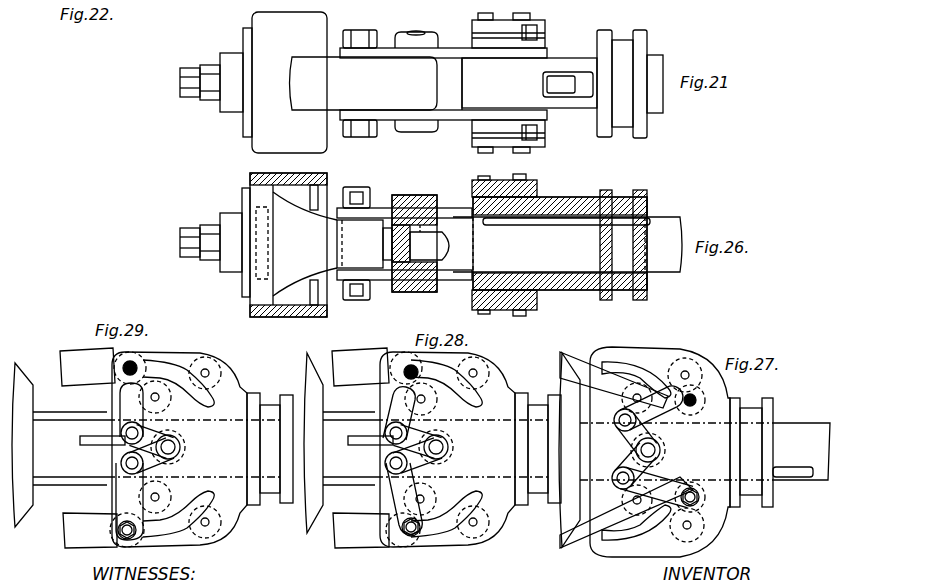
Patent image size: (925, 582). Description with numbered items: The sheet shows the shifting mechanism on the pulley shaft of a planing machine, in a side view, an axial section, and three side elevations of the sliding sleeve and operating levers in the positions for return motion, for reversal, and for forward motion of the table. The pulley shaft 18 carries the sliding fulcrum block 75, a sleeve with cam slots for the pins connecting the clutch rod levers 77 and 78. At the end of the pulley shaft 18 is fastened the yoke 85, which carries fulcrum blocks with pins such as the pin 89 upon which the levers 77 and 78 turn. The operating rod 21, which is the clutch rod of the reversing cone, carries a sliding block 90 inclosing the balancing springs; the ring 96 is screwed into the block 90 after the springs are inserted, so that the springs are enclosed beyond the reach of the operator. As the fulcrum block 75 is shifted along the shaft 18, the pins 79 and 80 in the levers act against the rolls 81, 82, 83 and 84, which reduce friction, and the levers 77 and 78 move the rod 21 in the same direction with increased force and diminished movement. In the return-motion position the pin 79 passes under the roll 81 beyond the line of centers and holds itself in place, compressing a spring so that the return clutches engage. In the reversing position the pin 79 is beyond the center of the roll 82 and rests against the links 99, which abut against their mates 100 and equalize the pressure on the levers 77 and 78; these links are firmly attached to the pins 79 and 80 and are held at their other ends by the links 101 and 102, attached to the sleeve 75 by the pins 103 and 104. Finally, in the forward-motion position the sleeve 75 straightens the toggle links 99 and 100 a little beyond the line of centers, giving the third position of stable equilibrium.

In FIG. 26, the pulley shaft 18 is at (567, 244).
In FIG. 26, the operating rod 21 is at (429, 242).
In FIG. 21, the sliding fulcrum block 75 is at (562, 83).
In FIG. 26, the sliding fulcrum block 75 is at (570, 203).
In FIG. 26, the clutch rod levers 77 is at (460, 213).
In FIG. 29, the clutch rod levers 77 is at (87, 367).
In FIG. 28, the clutch rod levers 77 is at (360, 367).
In FIG. 21, the clutch rod levers 78 is at (451, 52).
In FIG. 29, the clutch rod levers 78 is at (90, 530).
In FIG. 28, the clutch rod levers 78 is at (361, 530).
In FIG. 29, the pin 79 is at (140, 368).
In FIG. 28, the pin 79 is at (436, 379).
In FIG. 27, the pin 79 is at (698, 400).
In FIG. 21, the pin 80 is at (537, 32).
In FIG. 29, the pin 80 is at (137, 528).
In FIG. 28, the pin 80 is at (434, 519).
In FIG. 27, the pin 80 is at (699, 497).
In FIG. 29, the roll 81 is at (205, 375).
In FIG. 28, the roll 81 is at (473, 375).
In FIG. 27, the roll 81 is at (685, 375).
In FIG. 29, the roll 82 is at (155, 398).
In FIG. 28, the roll 82 is at (421, 399).
In FIG. 27, the roll 82 is at (637, 398).
In FIG. 21, the roll 83 is at (568, 84).
In FIG. 29, the roll 83 is at (205, 521).
In FIG. 28, the roll 83 is at (473, 521).
In FIG. 27, the roll 83 is at (687, 525).
In FIG. 29, the roll 84 is at (155, 497).
In FIG. 28, the roll 84 is at (420, 499).
In FIG. 27, the roll 84 is at (637, 502).
In FIG. 21, the yoke 85 is at (344, 82).
In FIG. 26, the yoke 85 is at (343, 237).
In FIG. 21, the pin 89 is at (355, 30).
In FIG. 26, the sliding block 90 is at (364, 243).
In FIG. 26, the ring 96 is at (235, 242).
In FIG. 29, the links 99 is at (130, 410).
In FIG. 28, the links 99 is at (399, 413).
In FIG. 27, the links 99 is at (651, 408).
In FIG. 29, the links 100 is at (128, 501).
In FIG. 28, the links 100 is at (402, 498).
In FIG. 27, the links 100 is at (656, 487).
In FIG. 29, the links 101 is at (141, 433).
In FIG. 28, the links 101 is at (406, 433).
In FIG. 27, the links 101 is at (628, 424).
In FIG. 29, the links 102 is at (141, 463).
In FIG. 28, the links 102 is at (406, 463).
In FIG. 27, the links 102 is at (625, 474).
In FIG. 21, the pin 103 is at (524, 150).
In FIG. 26, the pin 103 is at (520, 316).
In FIG. 29, the pin 103 is at (180, 447).
In FIG. 28, the pin 103 is at (435, 449).
In FIG. 27, the pin 103 is at (661, 450).
In FIG. 21, the pin 104 is at (518, 20).
In FIG. 26, the pin 104 is at (519, 180).